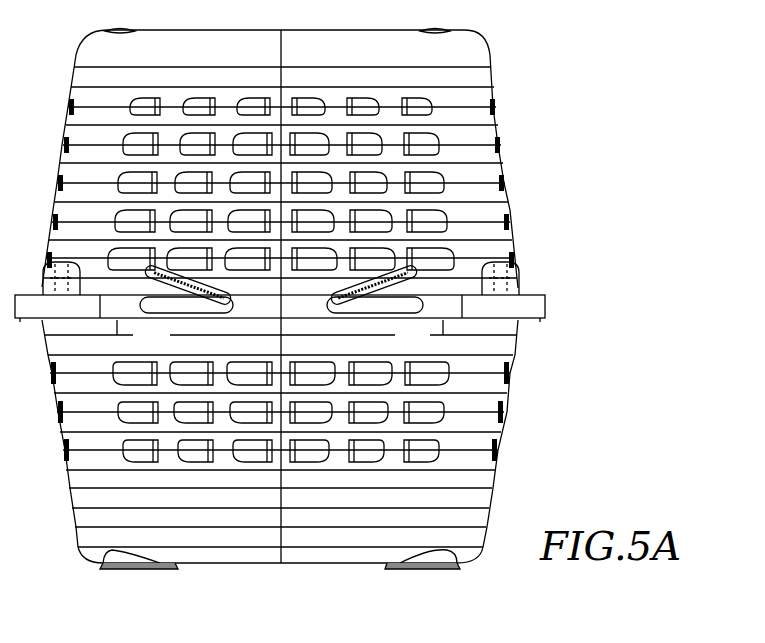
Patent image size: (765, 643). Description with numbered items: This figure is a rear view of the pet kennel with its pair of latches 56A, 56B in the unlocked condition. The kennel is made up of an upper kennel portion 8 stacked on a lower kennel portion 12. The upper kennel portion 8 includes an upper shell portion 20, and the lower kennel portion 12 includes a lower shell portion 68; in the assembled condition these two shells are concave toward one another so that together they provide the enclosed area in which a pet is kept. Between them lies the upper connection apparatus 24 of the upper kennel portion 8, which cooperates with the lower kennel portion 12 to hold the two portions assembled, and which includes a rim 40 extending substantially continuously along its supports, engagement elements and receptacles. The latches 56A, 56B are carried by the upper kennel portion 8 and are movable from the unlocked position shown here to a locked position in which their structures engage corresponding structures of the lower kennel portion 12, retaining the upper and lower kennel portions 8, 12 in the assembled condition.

The upper kennel portion 8 is at (497, 71).
The upper shell portion 20 is at (503, 164).
The upper connection apparatus 24 is at (536, 294).
The rim 40 is at (547, 310).
The latch 56A is at (143, 281).
The latch 56B is at (437, 280).
The lower kennel portion 12 is at (506, 466).
The lower shell portion 68 is at (495, 497).